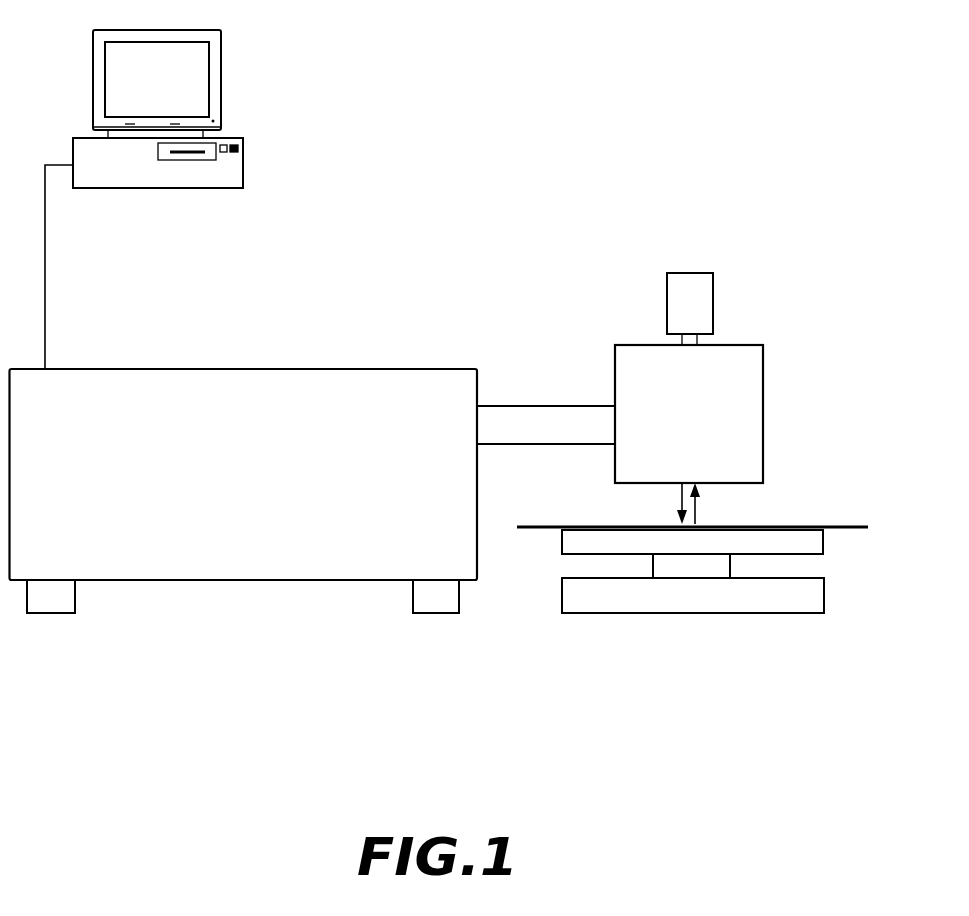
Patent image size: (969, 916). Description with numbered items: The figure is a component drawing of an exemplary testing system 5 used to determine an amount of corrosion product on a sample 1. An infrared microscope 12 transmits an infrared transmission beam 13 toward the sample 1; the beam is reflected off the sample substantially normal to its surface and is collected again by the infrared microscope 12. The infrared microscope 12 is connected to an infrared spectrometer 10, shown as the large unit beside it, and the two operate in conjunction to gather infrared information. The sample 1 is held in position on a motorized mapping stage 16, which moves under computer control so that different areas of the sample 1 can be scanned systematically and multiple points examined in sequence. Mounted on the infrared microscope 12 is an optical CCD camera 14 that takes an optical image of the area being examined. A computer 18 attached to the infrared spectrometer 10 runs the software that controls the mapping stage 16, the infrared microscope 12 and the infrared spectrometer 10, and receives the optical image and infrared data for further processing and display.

The sample 1 is at (851, 525).
The testing system 5 is at (228, 716).
The infrared spectrometer 10 is at (290, 369).
The infrared microscope 12 is at (763, 383).
The infrared transmission beam 13 is at (706, 509).
The optical CCD camera 14 is at (713, 297).
The motorized mapping stage 16 is at (823, 541).
The computer 18 is at (221, 80).